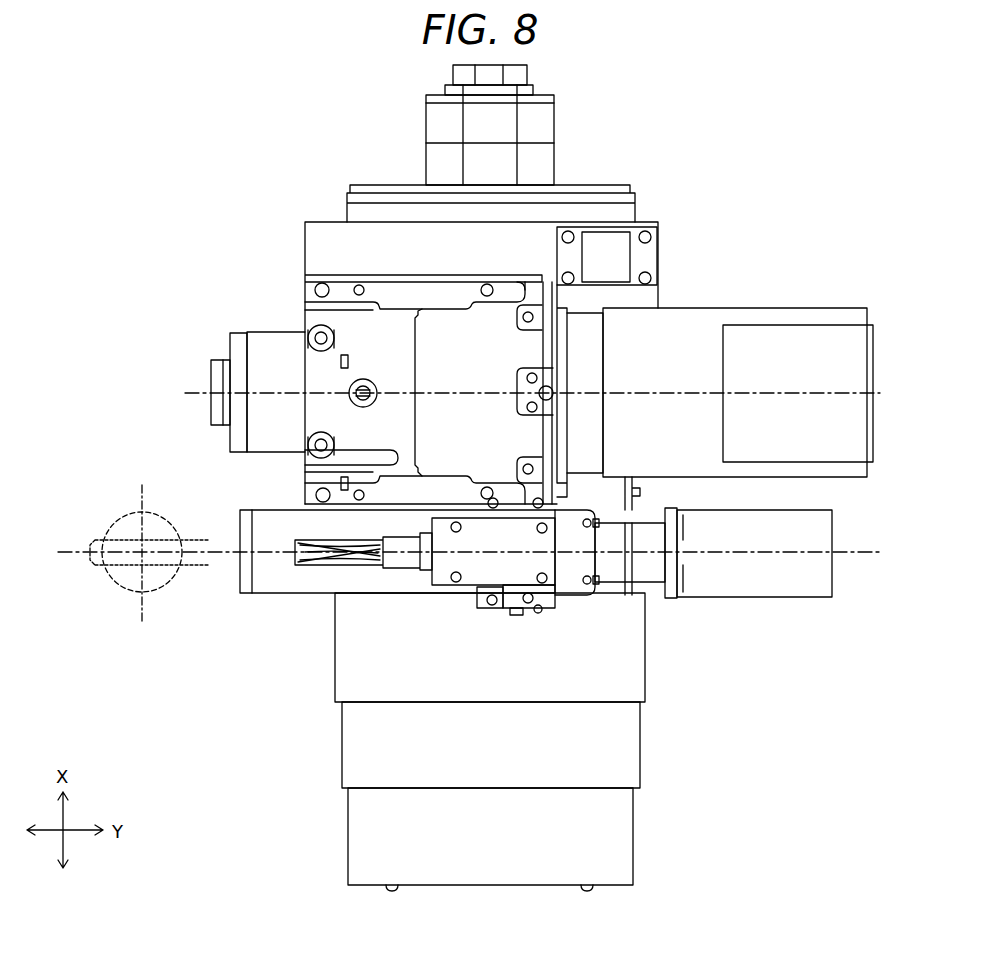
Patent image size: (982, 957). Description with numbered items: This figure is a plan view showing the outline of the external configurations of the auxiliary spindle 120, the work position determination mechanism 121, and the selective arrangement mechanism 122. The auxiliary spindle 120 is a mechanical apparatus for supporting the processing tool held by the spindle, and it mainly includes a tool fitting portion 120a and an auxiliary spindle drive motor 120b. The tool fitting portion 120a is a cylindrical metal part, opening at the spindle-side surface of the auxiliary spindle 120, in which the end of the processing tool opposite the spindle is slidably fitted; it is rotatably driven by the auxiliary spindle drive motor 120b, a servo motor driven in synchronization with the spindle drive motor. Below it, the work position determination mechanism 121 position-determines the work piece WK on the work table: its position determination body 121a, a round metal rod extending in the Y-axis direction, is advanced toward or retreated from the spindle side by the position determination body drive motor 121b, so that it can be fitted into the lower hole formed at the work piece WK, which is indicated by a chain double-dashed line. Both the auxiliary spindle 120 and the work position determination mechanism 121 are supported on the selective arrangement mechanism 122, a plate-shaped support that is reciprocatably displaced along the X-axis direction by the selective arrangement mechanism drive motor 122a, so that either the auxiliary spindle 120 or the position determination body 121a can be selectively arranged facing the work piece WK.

The auxiliary spindle 120 is at (224, 326).
The tool fitting portion 120a is at (211, 377).
The auxiliary spindle drive motor 120b is at (735, 308).
The work position determination mechanism 121 is at (494, 623).
The position determination body 121a is at (318, 540).
The position determination body drive motor 121b is at (750, 598).
The selective arrangement mechanism 122 is at (307, 711).
The selective arrangement mechanism drive motor 122a is at (556, 105).
The work piece WK is at (133, 515).